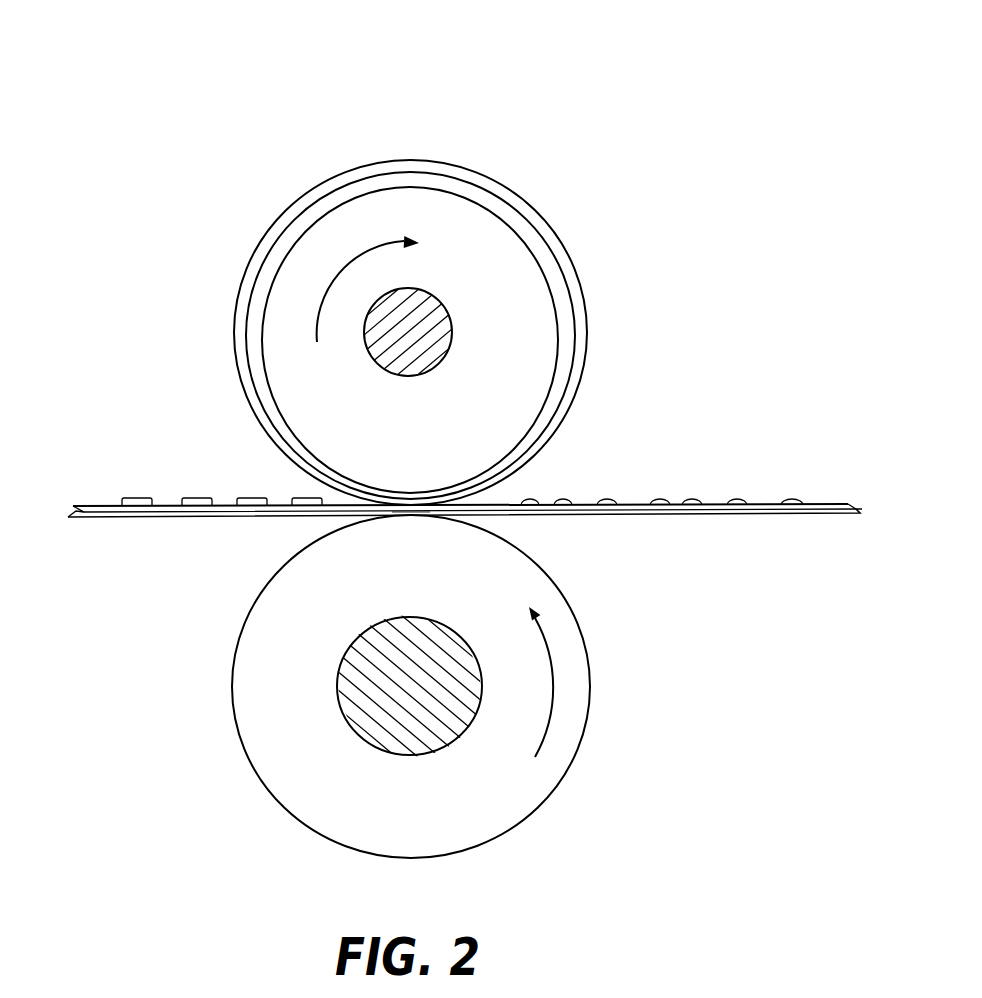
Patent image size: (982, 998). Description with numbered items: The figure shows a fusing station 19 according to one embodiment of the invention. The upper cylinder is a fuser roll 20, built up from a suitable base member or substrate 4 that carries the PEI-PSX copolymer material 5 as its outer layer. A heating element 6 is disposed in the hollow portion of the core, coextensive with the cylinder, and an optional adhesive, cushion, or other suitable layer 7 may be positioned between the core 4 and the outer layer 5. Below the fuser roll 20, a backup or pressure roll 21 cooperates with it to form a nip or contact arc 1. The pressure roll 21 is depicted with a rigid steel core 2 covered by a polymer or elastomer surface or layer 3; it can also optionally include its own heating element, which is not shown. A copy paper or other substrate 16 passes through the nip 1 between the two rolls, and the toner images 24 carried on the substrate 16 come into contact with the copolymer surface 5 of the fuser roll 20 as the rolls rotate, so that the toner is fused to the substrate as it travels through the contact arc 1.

The fusing station 19 is at (277, 71).
The fuser roll 20 is at (185, 332).
The backup or pressure roll 21 is at (144, 641).
The PEI-PSX copolymer material 5 is at (310, 197).
The adhesive, cushion, or other suitable layer 7 is at (498, 192).
The base member or substrate 4 is at (460, 196).
The heating element 6 is at (430, 307).
The polymer or elastomer surface or layer 3 is at (522, 798).
The rigid steel core 2 is at (342, 712).
The copy paper or other substrate 16 is at (761, 515).
The toner images 24 is at (790, 498).
The nip or contact arc 1 is at (392, 512).